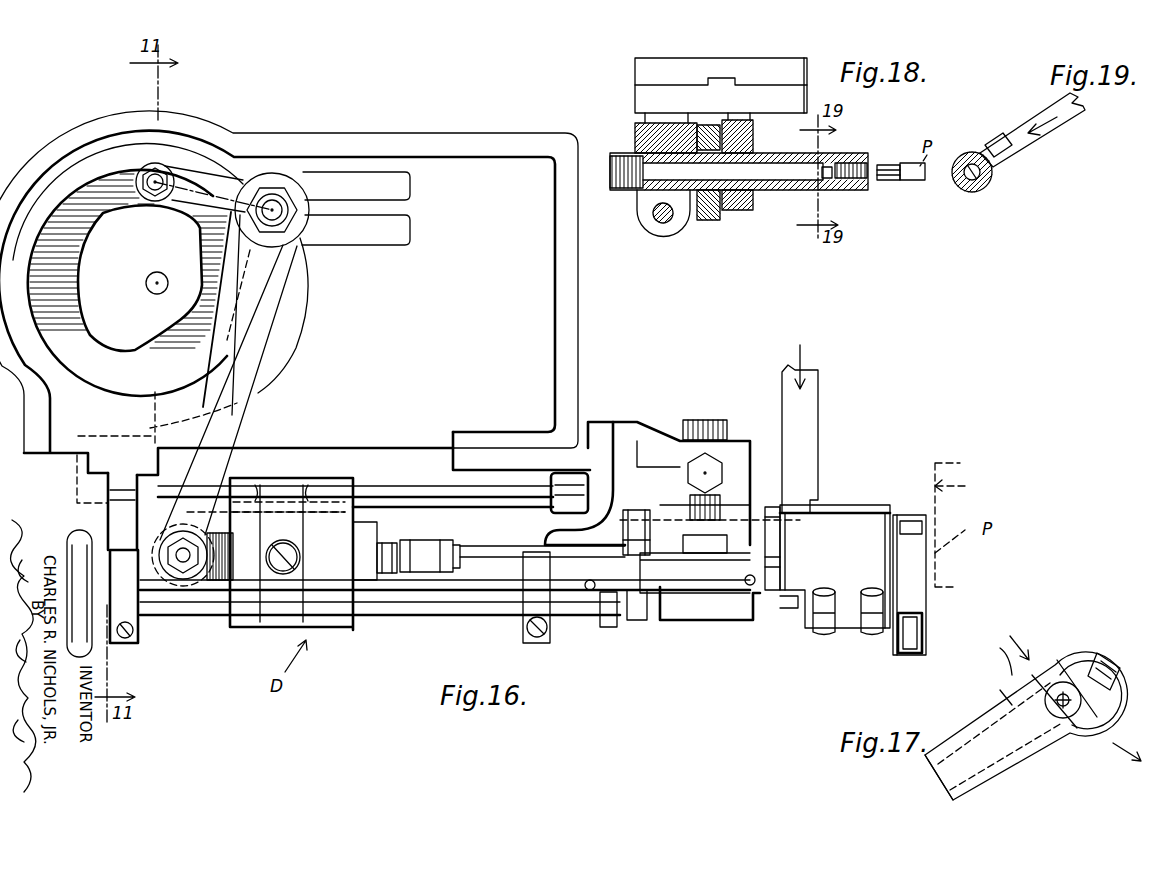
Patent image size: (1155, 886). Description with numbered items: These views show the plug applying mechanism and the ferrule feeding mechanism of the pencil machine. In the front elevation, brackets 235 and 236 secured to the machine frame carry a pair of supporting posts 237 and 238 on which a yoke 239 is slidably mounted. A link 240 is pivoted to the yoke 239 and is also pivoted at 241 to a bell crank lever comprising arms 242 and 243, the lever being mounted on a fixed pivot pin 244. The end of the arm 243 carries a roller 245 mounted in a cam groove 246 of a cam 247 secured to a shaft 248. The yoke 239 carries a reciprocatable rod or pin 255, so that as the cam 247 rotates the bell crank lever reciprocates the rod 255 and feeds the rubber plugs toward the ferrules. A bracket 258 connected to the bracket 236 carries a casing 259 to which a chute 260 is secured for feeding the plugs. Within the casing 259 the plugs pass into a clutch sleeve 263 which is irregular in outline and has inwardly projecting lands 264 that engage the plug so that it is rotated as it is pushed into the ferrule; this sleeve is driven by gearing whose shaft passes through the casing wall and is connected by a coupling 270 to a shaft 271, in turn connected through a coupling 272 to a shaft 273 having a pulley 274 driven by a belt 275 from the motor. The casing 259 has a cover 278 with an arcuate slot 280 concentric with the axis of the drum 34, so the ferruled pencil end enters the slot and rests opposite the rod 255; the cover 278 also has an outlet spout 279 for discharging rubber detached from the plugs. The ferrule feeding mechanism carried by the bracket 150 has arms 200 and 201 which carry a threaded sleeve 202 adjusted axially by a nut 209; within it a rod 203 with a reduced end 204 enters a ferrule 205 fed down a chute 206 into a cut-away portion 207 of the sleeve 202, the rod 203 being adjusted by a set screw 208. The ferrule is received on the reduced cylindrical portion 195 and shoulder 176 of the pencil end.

In FIG. 18, the angular bracket 150 is at (754, 97).
In FIG. 18, the shoulder 176 is at (888, 182).
In FIG. 18, the cylindrical portion 195 is at (882, 183).
In FIG. 18, the arm 200 is at (650, 128).
In FIG. 18, the arm 201 is at (745, 121).
In FIG. 18, the sleeve 202 is at (738, 211).
In FIG. 19, the sleeve 202 is at (992, 185).
In FIG. 18, the rod 203 is at (793, 170).
In FIG. 18, the reduced end 204 is at (828, 165).
In FIG. 18, the ferrule 205 is at (858, 165).
In FIG. 19, the ferrule 205 is at (967, 183).
In FIG. 19, the chute 206 is at (1005, 140).
In FIG. 19, the cut-away portion 207 is at (968, 155).
In FIG. 18, the set screw 208 is at (622, 191).
In FIG. 18, the nut 209 is at (707, 220).
In FIG. 16, the bracket 235 is at (102, 464).
In FIG. 16, the bracket 236 is at (543, 456).
In FIG. 16, the supporting post 237 is at (410, 494).
In FIG. 16, the supporting post 238 is at (390, 603).
In FIG. 16, the yoke 239 is at (323, 478).
In FIG. 16, the link 240 is at (224, 562).
In FIG. 16, the pivot 241 is at (183, 570).
In FIG. 16, the arm 242 is at (222, 437).
In FIG. 16, the arm 243 is at (228, 170).
In FIG. 16, the fixed pivot pin 244 is at (278, 206).
In FIG. 16, the roller 245 is at (141, 200).
In FIG. 16, the cam groove 246 is at (140, 292).
In FIG. 16, the cam 247 is at (282, 338).
In FIG. 16, the shaft 248 is at (149, 280).
In FIG. 16, the reciprocatable rod 255 is at (450, 556).
In FIG. 16, the bracket 258 is at (650, 455).
In FIG. 16, the casing 259 is at (835, 570).
In FIG. 17, the casing 259 is at (1068, 767).
In FIG. 16, the chute 260 is at (803, 393).
In FIG. 17, the clutch sleeve 263 is at (1060, 682).
In FIG. 17, the lands 264 is at (1060, 702).
In FIG. 16, the coupling 270 is at (748, 586).
In FIG. 17, the coupling 270 is at (1017, 705).
In FIG. 16, the shaft 271 is at (688, 582).
In FIG. 16, the coupling 272 is at (589, 591).
In FIG. 16, the shaft 273 is at (495, 588).
In FIG. 16, the pulley 274 is at (68, 539).
In FIG. 16, the belt 275 is at (85, 644).
In FIG. 16, the cover 278 is at (912, 572).
In FIG. 16, the outlet spout 279 is at (902, 644).
In FIG. 17, the outlet spout 279 is at (933, 768).
In FIG. 16, the arcuate slot 280 is at (913, 521).
In FIG. 17, the arcuate slot 280 is at (1057, 673).
In FIG. 16, the drum 34 is at (964, 525).